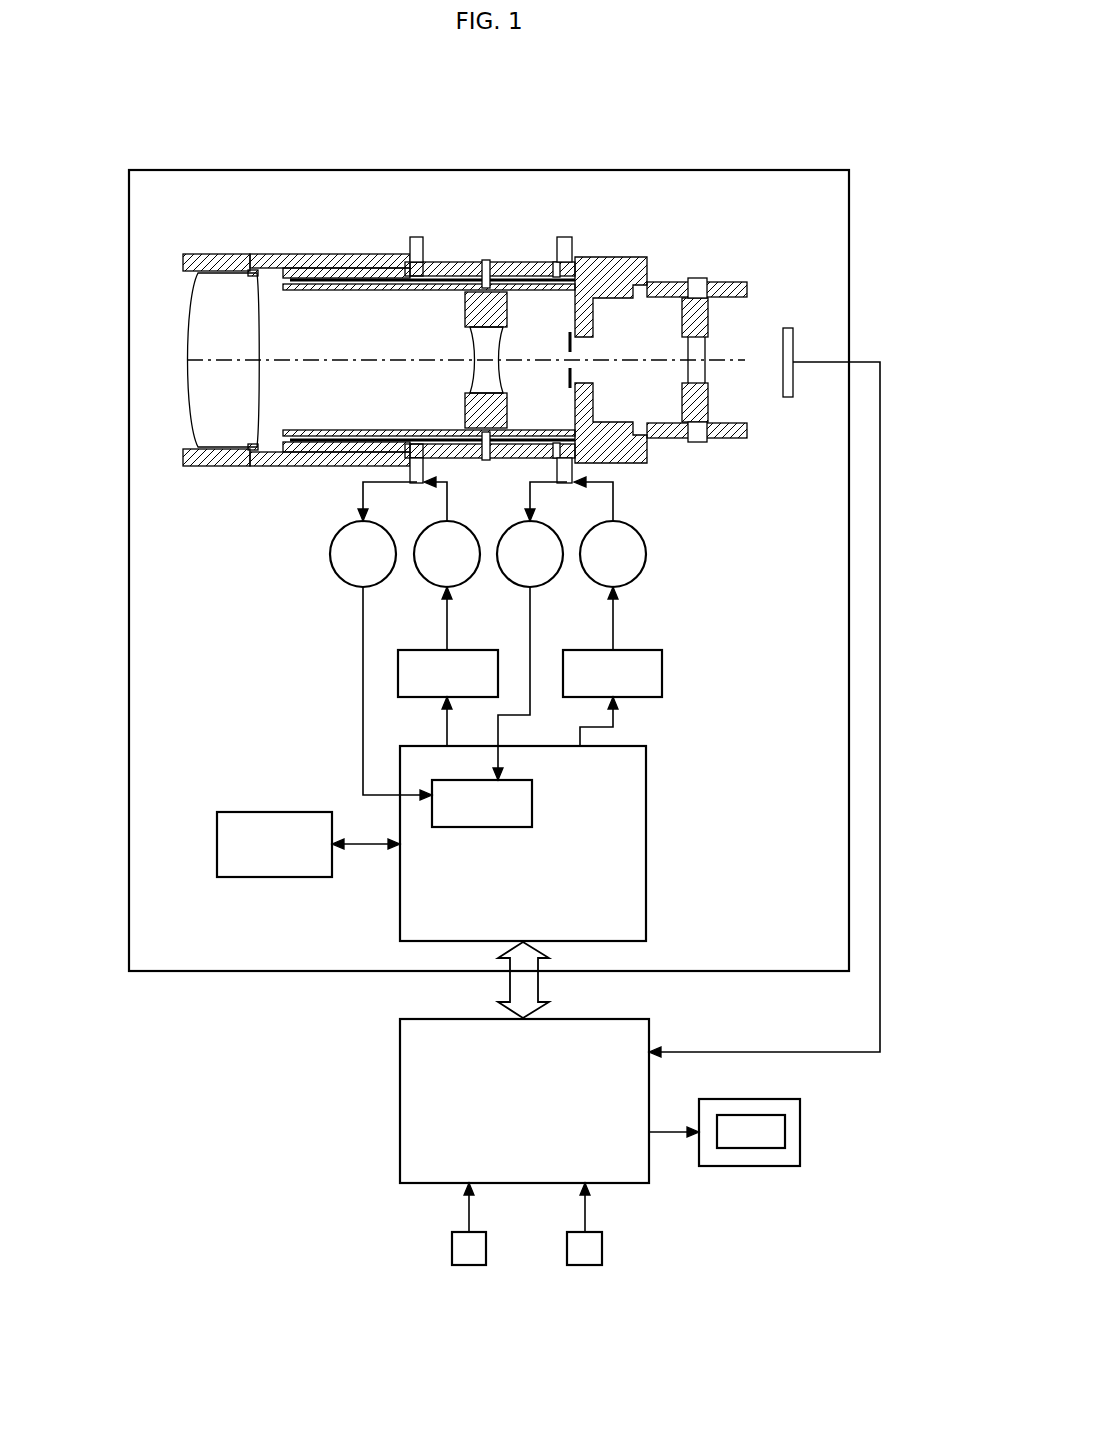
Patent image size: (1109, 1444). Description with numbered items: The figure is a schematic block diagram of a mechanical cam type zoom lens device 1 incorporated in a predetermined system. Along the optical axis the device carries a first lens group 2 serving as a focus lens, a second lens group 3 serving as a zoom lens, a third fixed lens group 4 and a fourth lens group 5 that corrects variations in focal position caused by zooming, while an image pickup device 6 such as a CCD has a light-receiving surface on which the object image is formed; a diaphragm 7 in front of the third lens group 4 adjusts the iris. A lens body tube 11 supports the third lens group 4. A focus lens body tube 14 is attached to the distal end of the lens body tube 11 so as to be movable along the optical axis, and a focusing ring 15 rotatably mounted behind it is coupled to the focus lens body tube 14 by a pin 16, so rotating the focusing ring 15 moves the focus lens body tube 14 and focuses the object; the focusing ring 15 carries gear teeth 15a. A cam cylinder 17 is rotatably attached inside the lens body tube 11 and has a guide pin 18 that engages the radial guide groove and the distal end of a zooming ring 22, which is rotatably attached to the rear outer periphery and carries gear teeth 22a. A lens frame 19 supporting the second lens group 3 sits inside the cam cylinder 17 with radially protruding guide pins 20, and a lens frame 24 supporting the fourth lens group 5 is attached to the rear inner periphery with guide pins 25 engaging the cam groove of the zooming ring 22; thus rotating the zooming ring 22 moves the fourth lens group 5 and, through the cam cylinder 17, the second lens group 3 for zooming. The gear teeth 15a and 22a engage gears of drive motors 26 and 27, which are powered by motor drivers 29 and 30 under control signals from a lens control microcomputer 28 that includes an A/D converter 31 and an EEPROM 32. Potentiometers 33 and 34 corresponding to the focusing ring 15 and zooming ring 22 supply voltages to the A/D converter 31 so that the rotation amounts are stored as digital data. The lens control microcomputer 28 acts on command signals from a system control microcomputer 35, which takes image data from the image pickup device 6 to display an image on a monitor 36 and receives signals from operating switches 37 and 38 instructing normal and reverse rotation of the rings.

The zoom lens device 1 is at (297, 168).
The first lens group 2 is at (202, 333).
The second lens group 3 is at (477, 350).
The third fixed lens group 4 is at (598, 350).
The fourth lens group 5 is at (700, 352).
The image pickup device 6 is at (794, 397).
The diaphragm 7 is at (677, 428).
The lens body tube 11 is at (527, 262).
The focus lens body tube 14 is at (270, 254).
The focusing ring 15 is at (406, 262).
The gear teeth 15a is at (417, 237).
The pin 16 is at (357, 264).
The cam cylinder 17 is at (310, 446).
The guide pin 18 is at (582, 262).
The lens frame 19 is at (503, 262).
The guide pins 20 is at (485, 260).
The zooming ring 22 is at (555, 262).
The gear teeth 22a is at (567, 238).
The lens frame 24 is at (682, 307).
The guide pins 25 is at (698, 280).
The drive motor 26 is at (470, 530).
The drive motor 27 is at (639, 569).
The lens control microcomputer 28 is at (658, 828).
The motor driver 29 is at (423, 699).
The motor driver 30 is at (662, 680).
The analog-to-digital converter 31 is at (432, 818).
The EEPROM 32 is at (252, 812).
The potentiometer 33 is at (351, 576).
The potentiometer 34 is at (521, 584).
The system control microcomputer 35 is at (400, 1062).
The monitor 36 is at (800, 1133).
The operating switch 37 is at (468, 1265).
The operating switch 38 is at (584, 1265).